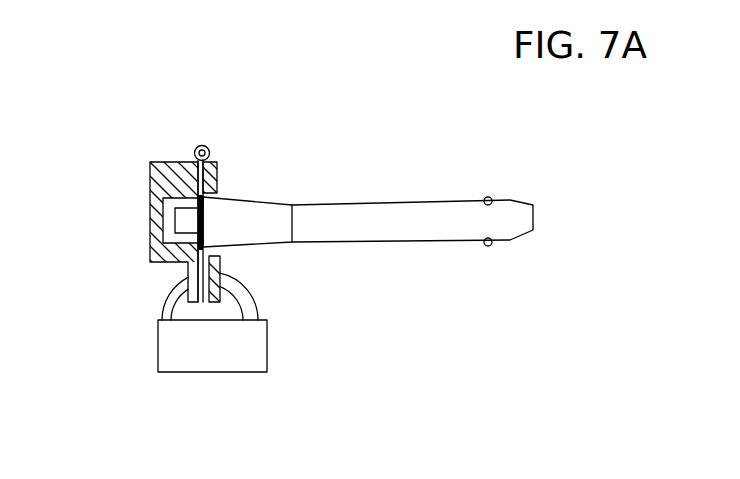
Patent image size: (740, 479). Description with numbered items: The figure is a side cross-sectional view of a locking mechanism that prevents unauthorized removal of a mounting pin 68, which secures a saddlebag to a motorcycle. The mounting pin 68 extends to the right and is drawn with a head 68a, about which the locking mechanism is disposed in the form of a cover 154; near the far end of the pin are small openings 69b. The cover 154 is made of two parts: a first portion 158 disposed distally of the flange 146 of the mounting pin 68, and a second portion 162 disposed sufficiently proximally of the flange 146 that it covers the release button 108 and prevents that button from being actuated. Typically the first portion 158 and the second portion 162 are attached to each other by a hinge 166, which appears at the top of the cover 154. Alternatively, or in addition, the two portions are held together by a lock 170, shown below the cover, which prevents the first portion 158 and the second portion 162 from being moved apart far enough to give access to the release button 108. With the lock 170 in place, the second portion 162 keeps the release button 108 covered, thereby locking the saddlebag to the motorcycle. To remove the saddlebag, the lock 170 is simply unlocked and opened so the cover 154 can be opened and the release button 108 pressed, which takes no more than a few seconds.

The cover 154 is at (172, 172).
The second portion 162 is at (152, 163).
The hinge 166 is at (206, 149).
The first portion 158 is at (218, 172).
The release button 108 is at (178, 220).
The head 68a is at (242, 205).
The mounting pin 68 is at (383, 197).
The apertures 69b is at (517, 197).
The flange 146 is at (218, 262).
The lock 170 is at (248, 367).